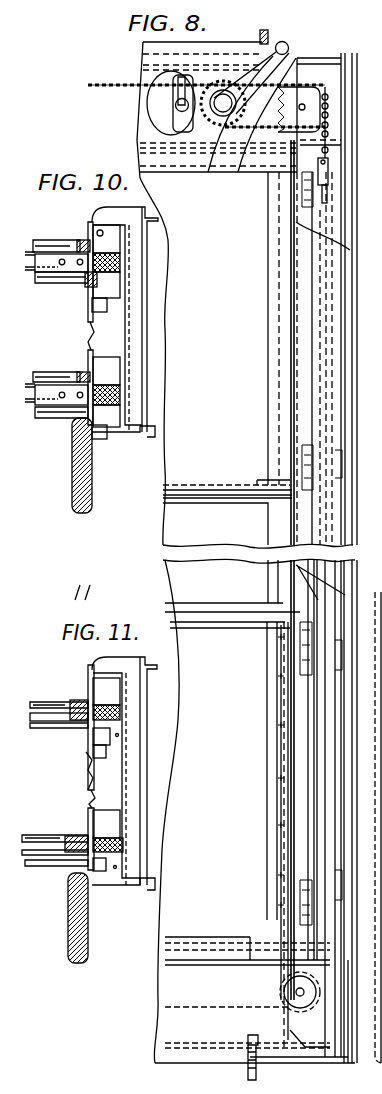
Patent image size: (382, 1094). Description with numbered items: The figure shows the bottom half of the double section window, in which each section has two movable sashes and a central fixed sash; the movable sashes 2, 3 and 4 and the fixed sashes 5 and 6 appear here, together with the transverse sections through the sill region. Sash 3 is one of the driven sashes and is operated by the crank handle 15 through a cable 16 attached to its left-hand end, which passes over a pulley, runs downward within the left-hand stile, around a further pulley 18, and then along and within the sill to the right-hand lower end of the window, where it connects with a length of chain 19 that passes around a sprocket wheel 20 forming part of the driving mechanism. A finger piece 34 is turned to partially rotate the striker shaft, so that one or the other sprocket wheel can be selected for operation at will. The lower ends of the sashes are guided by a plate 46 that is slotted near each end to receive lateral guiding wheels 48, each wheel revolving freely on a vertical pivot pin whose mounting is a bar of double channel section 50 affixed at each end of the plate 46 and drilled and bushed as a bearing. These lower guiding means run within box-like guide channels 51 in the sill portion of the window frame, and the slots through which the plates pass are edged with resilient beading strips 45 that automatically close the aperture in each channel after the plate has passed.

In FIG. 10, the movable sash 2 is at (55, 375).
In FIG. 11, the movable sash 3 is at (251, 771).
In FIG. 10, the movable sash 4 is at (48, 232).
In FIG. 10, the fixed sash 5 is at (37, 391).
In FIG. 11, the fixed sash 5 is at (52, 706).
In FIG. 10, the fixed sash 6 is at (43, 263).
In FIG. 11, the fixed sash 6 is at (50, 848).
In FIG. 8, the crank handle 15 is at (289, 48).
In FIG. 10, the cable 16 is at (322, 228).
In FIG. 11, the cable 16 is at (275, 1010).
In FIG. 11, the pulley 18 is at (283, 991).
In FIG. 8, the chain 19 is at (125, 82).
In FIG. 8, the sprocket wheel 20 is at (316, 103).
In FIG. 8, the finger piece 34 is at (177, 98).
In FIG. 10, the resilient beading strip 45 is at (78, 419).
In FIG. 11, the resilient beading strip 45 is at (86, 754).
In FIG. 10, the plate 46 is at (87, 241).
In FIG. 11, the plate 46 is at (376, 589).
In FIG. 10, the lateral guiding wheel 48 is at (98, 306).
In FIG. 11, the lateral guiding wheel 48 is at (100, 758).
In FIG. 11, the bar of double channel section 50 is at (110, 740).
In FIG. 10, the guide channel 51 is at (176, 410).
In FIG. 11, the guide channel 51 is at (149, 853).